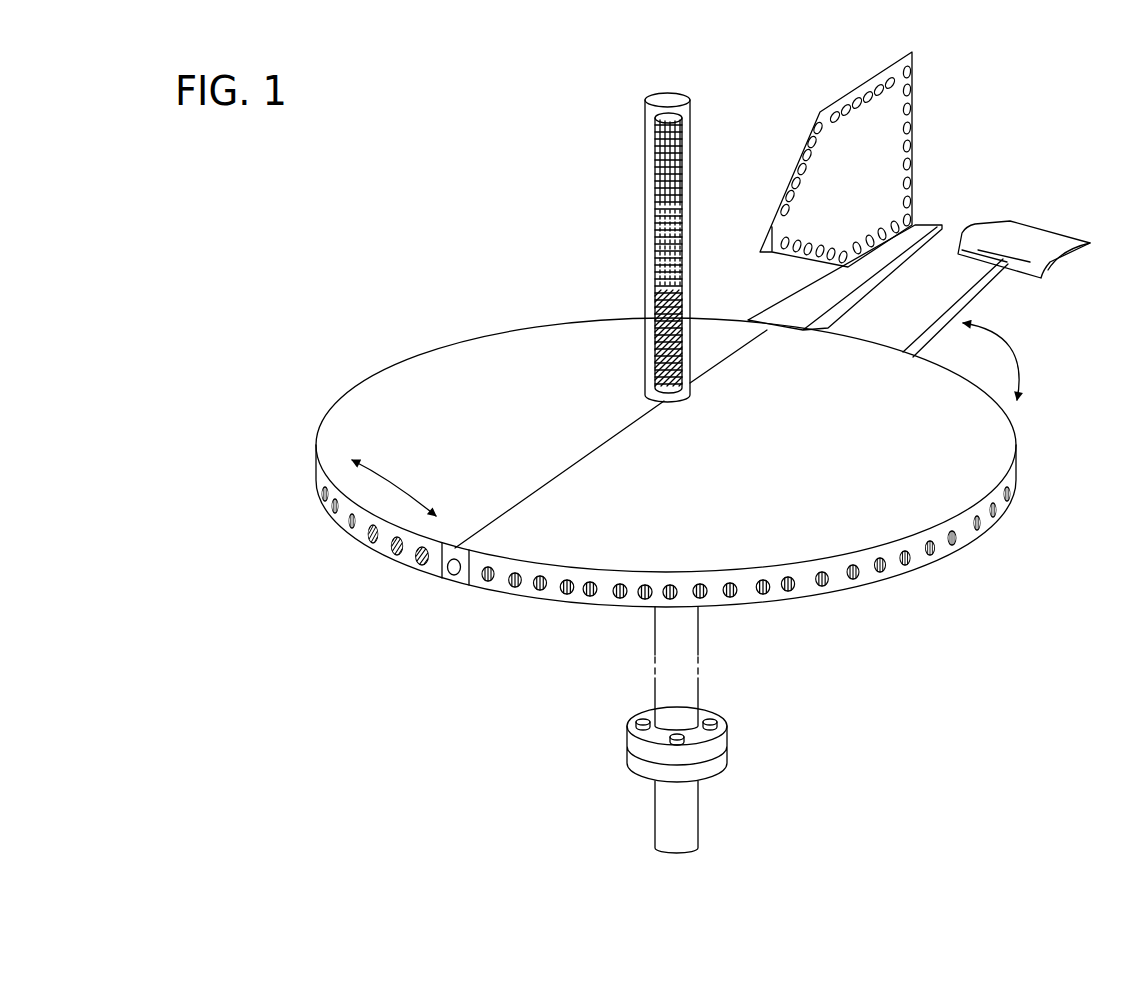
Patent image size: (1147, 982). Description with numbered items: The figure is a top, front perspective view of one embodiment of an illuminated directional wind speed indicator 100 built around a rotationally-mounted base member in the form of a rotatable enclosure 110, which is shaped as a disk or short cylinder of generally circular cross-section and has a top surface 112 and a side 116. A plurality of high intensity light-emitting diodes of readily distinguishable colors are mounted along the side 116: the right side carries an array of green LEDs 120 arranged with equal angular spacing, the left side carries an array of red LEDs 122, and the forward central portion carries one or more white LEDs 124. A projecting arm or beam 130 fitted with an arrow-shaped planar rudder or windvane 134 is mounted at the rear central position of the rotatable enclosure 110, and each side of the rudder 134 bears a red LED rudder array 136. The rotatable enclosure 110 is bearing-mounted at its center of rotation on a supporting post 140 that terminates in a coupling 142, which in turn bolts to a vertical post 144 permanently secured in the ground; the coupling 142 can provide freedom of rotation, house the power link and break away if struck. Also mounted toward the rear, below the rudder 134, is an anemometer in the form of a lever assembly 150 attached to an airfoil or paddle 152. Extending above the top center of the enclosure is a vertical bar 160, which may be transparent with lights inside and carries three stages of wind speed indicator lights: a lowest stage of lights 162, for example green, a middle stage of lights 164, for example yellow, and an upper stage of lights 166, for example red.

The illuminated directional wind speed indicator 100 is at (402, 205).
The rotatable enclosure 110 is at (470, 343).
The top surface 112 is at (428, 392).
The side 116 is at (363, 521).
The green LEDs 120 is at (423, 558).
The red LEDs 122 is at (537, 594).
The white LEDs 124 is at (453, 564).
The projecting arm or beam 130 is at (862, 307).
The rudder or windvane 134 is at (842, 88).
The red LED rudder array 136 is at (912, 150).
The supporting post 140 is at (705, 630).
The coupling 142 is at (730, 748).
The vertical post 144 is at (703, 822).
The lever assembly 150 is at (982, 295).
The airfoil or paddle 152 is at (1060, 262).
The vertical bar 160 is at (668, 90).
The lowest stage of lights 162 is at (656, 346).
The middle stage of lights 164 is at (655, 243).
The upper stage of lights 166 is at (646, 162).